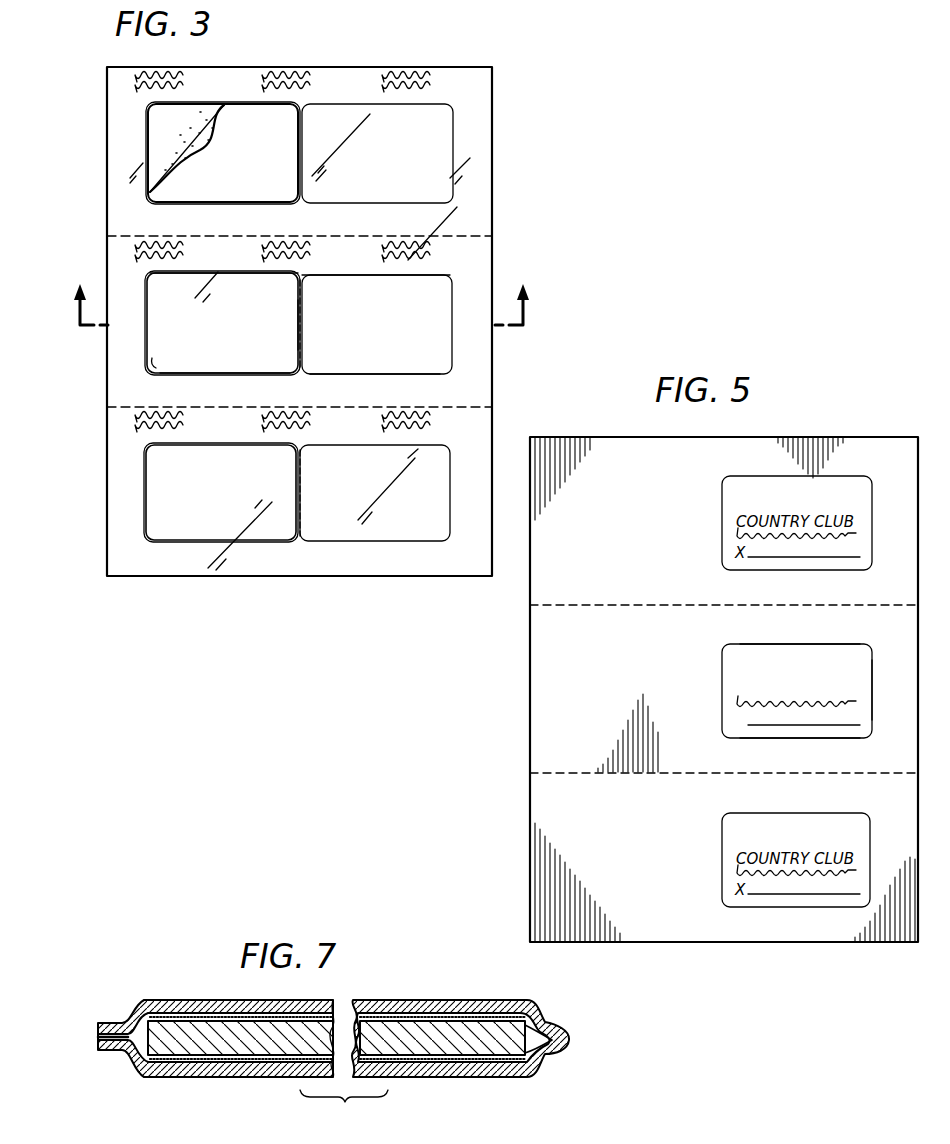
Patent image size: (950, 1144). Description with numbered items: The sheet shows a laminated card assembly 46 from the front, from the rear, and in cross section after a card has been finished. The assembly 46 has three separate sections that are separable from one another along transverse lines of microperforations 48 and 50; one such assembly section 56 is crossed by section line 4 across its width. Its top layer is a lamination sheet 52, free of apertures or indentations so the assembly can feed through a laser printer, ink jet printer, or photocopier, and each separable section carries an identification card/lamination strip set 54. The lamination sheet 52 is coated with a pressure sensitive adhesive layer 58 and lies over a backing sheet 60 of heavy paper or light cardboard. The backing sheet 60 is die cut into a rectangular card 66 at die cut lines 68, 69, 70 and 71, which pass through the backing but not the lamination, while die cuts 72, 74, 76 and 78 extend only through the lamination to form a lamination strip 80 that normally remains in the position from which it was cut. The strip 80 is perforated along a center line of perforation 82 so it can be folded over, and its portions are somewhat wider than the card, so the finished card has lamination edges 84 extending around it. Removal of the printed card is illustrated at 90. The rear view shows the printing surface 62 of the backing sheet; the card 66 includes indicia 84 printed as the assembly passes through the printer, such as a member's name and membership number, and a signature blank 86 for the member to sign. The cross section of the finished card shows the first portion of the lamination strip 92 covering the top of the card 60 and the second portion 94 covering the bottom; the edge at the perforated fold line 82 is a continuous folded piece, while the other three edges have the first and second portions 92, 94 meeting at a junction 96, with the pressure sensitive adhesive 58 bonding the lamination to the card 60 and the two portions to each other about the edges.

In FIG. 3, the laminated card assembly 46 is at (345, 52).
In FIG. 5, the laminated card assembly 46 is at (838, 410).
In FIG. 3, the lamination sheet 52 is at (478, 94).
In FIG. 3, the identification card/lamination strip set 54 is at (475, 182).
In FIG. 3, the transverse line of microperforations 48 is at (493, 236).
In FIG. 5, the transverse line of microperforations 48 is at (618, 605).
In FIG. 3, the assembly section 56 is at (512, 256).
In FIG. 5, the assembly section 56 is at (510, 740).
In FIG. 3, the transverse line of microperforations 50 is at (493, 407).
In FIG. 5, the transverse line of microperforations 50 is at (598, 775).
In FIG. 3, the card removal 90 is at (160, 126).
In FIG. 3, the section line 4- 4 is at (301, 295).
In FIG. 3, the die cut 74 is at (212, 272).
In FIG. 3, the die cut 76 is at (452, 304).
In FIG. 3, the line of perforation 82 is at (301, 320).
In FIG. 7, the line of perforation 82 is at (592, 1048).
In FIG. 3, the die cut line 68 is at (148, 338).
In FIG. 5, the die cut line 68 is at (875, 668).
In FIG. 3, the die cut 72 is at (148, 334).
In FIG. 3, the rectangular card 66 is at (158, 362).
In FIG. 5, the rectangular card 66 is at (732, 622).
In FIG. 3, the die cut line 70 is at (300, 337).
In FIG. 5, the die cut line 70 is at (722, 718).
In FIG. 3, the die cut 78 is at (236, 374).
In FIG. 5, the printing surface 62 is at (542, 668).
In FIG. 5, the die cut line 69 is at (788, 650).
In FIG. 5, the indicia / lamination edges 84 is at (724, 668).
In FIG. 7, the indicia / lamination edges 84 is at (110, 1008).
In FIG. 5, the signature blank 86 is at (718, 702).
In FIG. 5, the die cut line 71 is at (796, 740).
In FIG. 7, the junction 96 is at (84, 1036).
In FIG. 7, the first portion of the lamination strip 92 is at (206, 1005).
In FIG. 7, the pressure sensitive adhesive layer 58 is at (446, 1022).
In FIG. 7, the backing sheet 60 is at (470, 1040).
In FIG. 7, the second portion of the lamination strip 94 is at (442, 1078).
In FIG. 7, the lamination strip 80 is at (313, 1117).